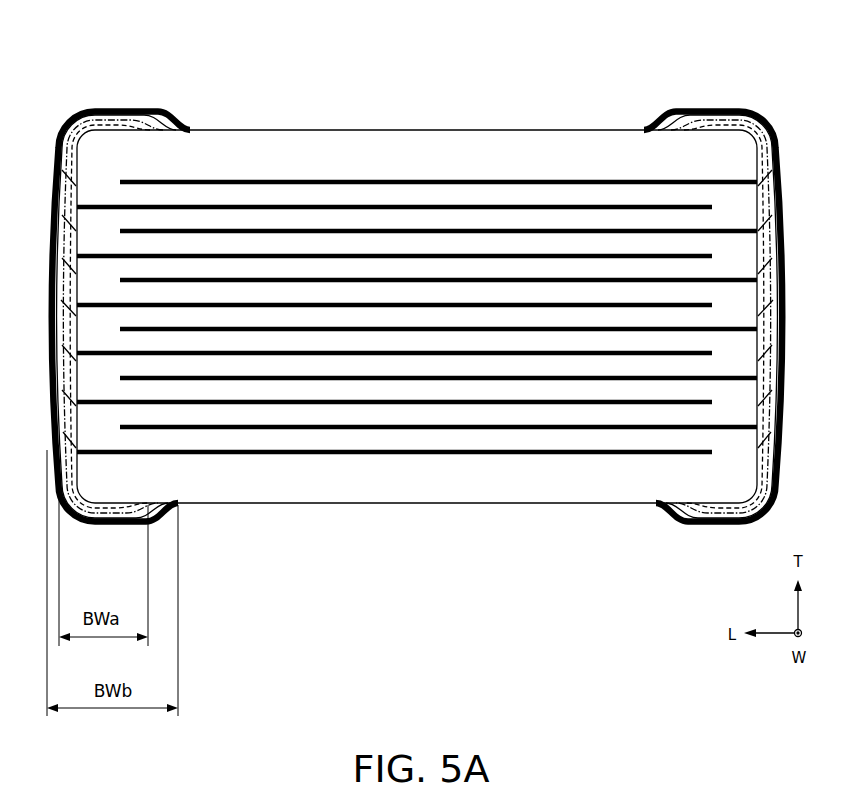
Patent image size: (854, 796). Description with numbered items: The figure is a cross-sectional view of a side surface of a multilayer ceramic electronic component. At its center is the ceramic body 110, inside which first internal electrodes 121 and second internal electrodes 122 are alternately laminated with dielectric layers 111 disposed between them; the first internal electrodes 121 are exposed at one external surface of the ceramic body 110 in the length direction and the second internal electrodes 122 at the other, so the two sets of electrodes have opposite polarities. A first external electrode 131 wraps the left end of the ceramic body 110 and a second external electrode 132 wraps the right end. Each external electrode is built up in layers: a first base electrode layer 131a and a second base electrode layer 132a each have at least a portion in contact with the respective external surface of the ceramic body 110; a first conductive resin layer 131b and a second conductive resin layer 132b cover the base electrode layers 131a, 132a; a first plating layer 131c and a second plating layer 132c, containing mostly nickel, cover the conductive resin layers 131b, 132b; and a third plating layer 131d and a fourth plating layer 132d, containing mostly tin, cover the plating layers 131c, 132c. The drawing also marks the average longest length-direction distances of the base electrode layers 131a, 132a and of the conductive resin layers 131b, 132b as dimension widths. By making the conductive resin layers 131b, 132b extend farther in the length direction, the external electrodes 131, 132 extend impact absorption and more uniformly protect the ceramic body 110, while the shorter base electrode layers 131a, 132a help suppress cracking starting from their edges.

The ceramic body 110 is at (368, 120).
The dielectric layer 111 is at (487, 198).
The first internal electrode 121 is at (435, 205).
The second internal electrode 122 is at (535, 180).
The first external electrode 131 is at (142, 269).
The first base electrode layer 131a is at (103, 292).
The first conductive resin layer 131b is at (127, 127).
The first plating layer 131c is at (168, 117).
The third plating layer 131d is at (193, 128).
The second external electrode 132 is at (691, 269).
The second base electrode layer 132a is at (729, 292).
The second conductive resin layer 132b is at (712, 125).
The second plating layer 132c is at (665, 114).
The fourth plating layer 132d is at (645, 128).